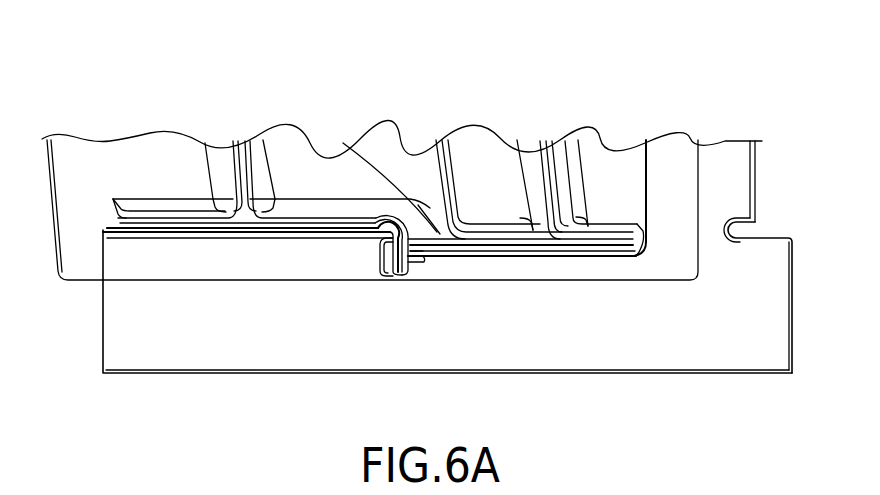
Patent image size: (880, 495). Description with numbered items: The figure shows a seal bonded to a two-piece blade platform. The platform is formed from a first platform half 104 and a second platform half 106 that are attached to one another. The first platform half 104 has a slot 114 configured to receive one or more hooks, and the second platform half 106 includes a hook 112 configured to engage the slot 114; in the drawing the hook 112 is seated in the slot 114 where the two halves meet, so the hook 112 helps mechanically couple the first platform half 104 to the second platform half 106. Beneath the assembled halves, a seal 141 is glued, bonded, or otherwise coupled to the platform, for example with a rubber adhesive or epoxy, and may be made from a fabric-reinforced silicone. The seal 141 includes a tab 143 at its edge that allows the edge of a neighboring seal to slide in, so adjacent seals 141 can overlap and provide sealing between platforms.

The first platform half 104 is at (181, 148).
The second platform half 106 is at (617, 145).
The hook 112 is at (388, 273).
The slot 114 is at (408, 271).
The seal 141 is at (623, 337).
The tab 143 is at (741, 241).